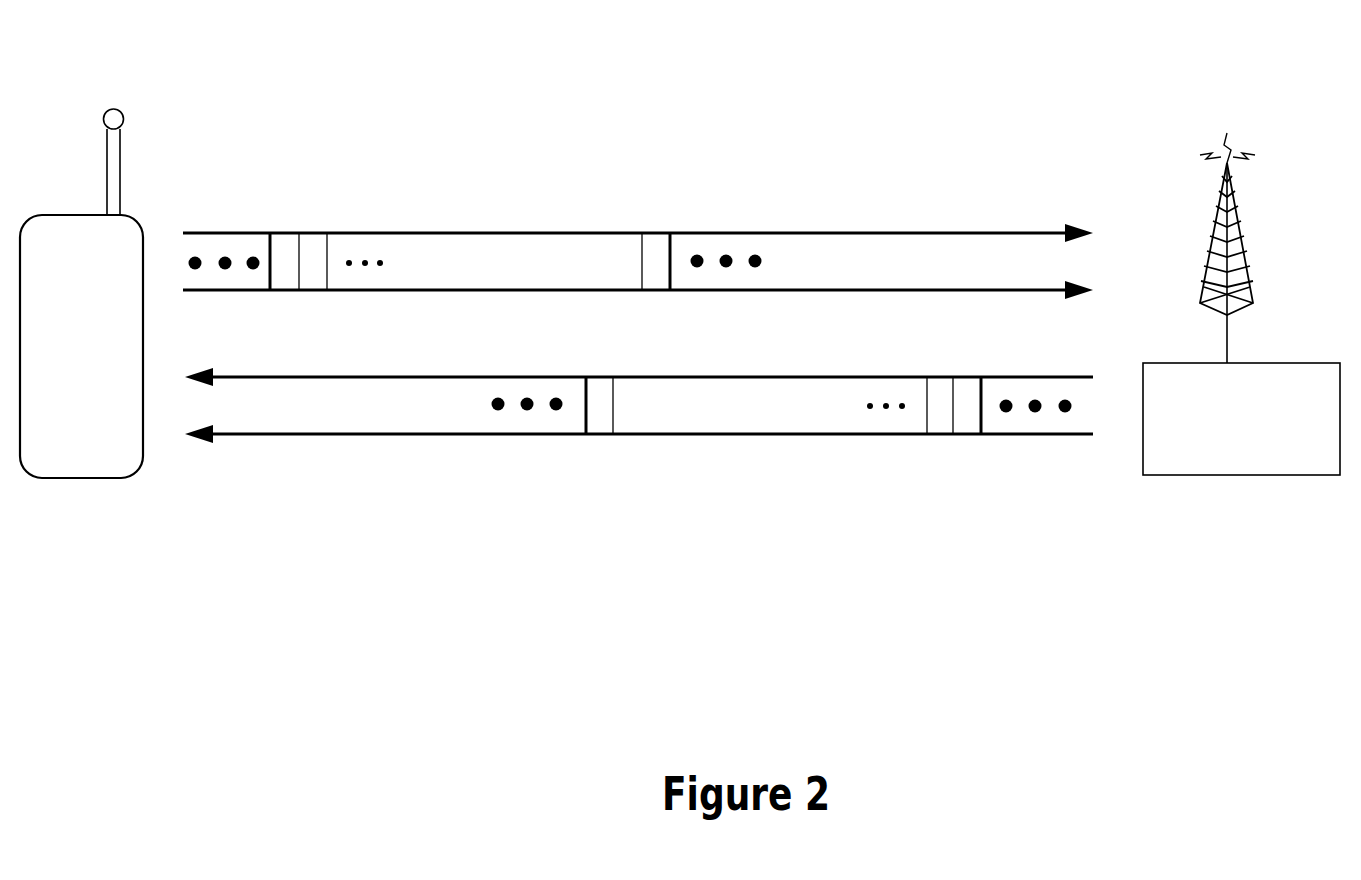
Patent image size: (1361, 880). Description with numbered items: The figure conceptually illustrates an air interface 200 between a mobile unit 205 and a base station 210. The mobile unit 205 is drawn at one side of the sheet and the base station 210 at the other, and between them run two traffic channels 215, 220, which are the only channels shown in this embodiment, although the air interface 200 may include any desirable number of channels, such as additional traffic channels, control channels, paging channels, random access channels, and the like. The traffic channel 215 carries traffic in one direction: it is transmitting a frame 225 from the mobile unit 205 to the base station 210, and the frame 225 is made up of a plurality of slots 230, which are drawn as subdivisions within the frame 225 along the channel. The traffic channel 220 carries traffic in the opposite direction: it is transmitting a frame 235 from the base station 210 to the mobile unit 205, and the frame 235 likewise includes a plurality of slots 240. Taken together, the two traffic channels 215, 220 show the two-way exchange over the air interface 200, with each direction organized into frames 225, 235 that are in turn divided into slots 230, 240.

The air interface 200 is at (745, 78).
The mobile unit 205 is at (100, 427).
The base station 210 is at (1252, 452).
The traffic channel 215 is at (843, 233).
The traffic channel 220 is at (390, 434).
The frame 225 is at (466, 190).
The slots 230 is at (316, 291).
The frame 235 is at (759, 468).
The slots 240 is at (596, 434).